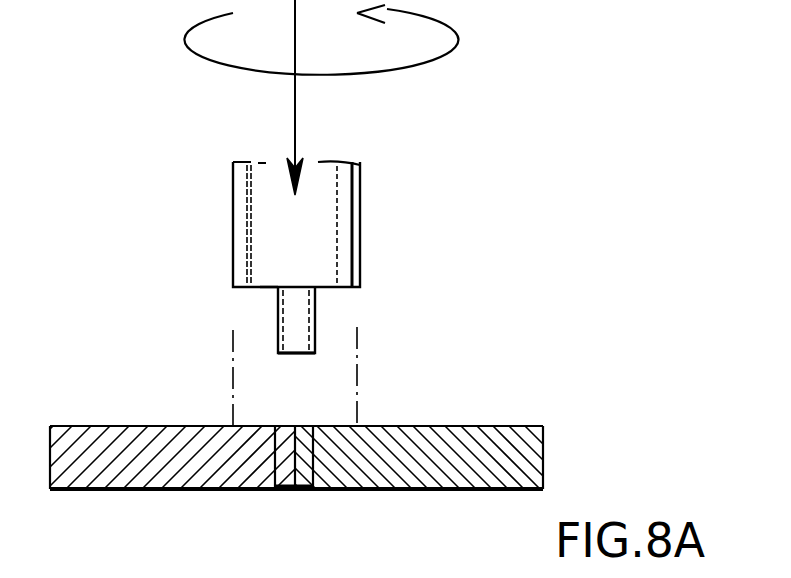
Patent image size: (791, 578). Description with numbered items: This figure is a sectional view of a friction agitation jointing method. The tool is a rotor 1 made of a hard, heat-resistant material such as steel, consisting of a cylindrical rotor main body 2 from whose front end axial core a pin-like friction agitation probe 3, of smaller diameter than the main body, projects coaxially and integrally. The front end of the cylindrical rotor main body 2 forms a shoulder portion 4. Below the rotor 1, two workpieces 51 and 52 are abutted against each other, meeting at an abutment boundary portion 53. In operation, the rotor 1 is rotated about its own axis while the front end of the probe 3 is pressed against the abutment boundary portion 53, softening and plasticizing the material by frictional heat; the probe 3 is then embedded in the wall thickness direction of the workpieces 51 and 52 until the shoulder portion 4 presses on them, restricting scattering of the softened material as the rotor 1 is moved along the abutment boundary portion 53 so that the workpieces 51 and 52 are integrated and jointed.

The rotor 1 is at (302, 249).
The cylindrical rotor main body 2 is at (363, 248).
The friction agitation probe 3 is at (315, 300).
The shoulder portion 4 is at (258, 290).
The workpiece 51 is at (87, 428).
The workpiece 52 is at (527, 426).
The abutment boundary portion 53 is at (280, 480).